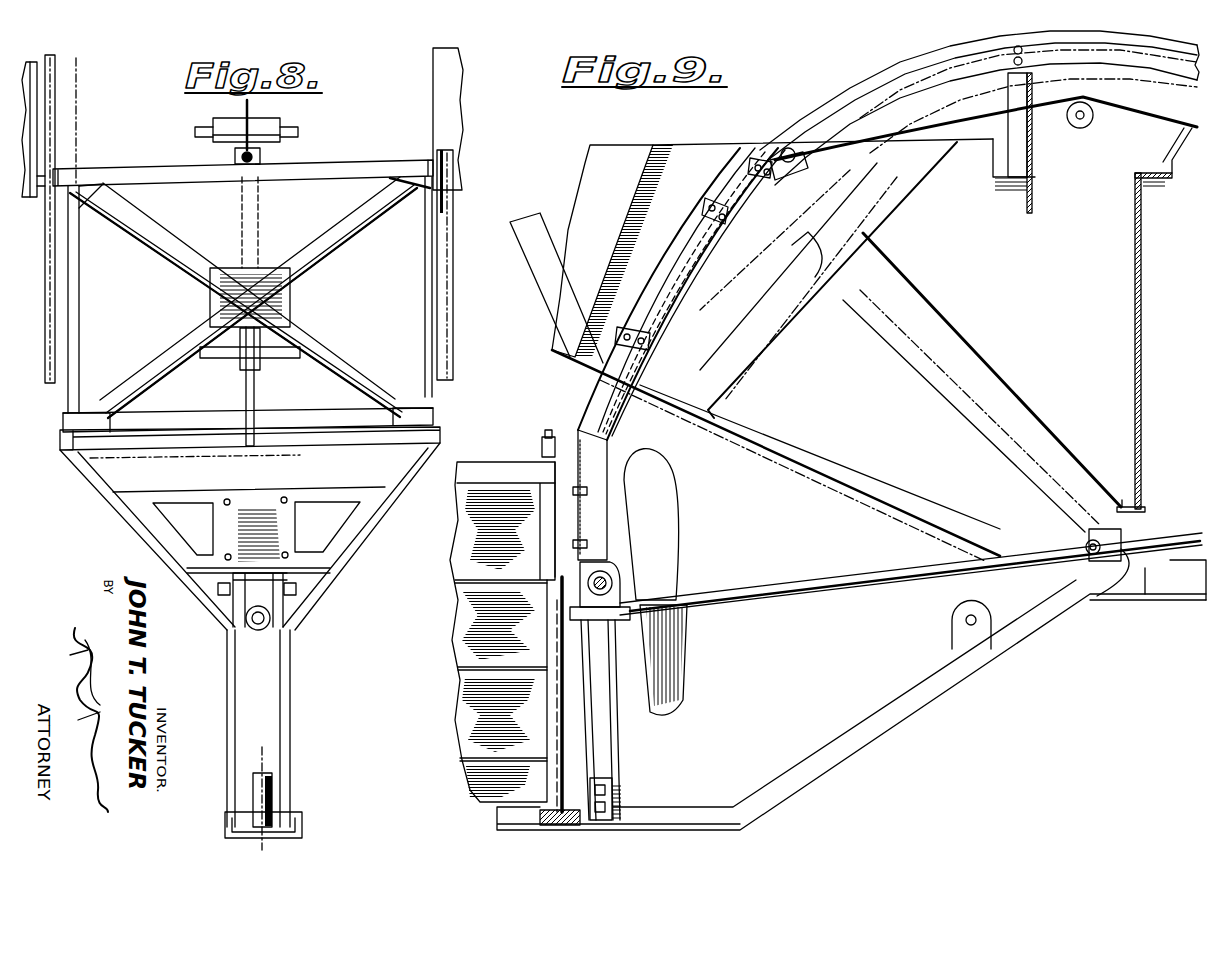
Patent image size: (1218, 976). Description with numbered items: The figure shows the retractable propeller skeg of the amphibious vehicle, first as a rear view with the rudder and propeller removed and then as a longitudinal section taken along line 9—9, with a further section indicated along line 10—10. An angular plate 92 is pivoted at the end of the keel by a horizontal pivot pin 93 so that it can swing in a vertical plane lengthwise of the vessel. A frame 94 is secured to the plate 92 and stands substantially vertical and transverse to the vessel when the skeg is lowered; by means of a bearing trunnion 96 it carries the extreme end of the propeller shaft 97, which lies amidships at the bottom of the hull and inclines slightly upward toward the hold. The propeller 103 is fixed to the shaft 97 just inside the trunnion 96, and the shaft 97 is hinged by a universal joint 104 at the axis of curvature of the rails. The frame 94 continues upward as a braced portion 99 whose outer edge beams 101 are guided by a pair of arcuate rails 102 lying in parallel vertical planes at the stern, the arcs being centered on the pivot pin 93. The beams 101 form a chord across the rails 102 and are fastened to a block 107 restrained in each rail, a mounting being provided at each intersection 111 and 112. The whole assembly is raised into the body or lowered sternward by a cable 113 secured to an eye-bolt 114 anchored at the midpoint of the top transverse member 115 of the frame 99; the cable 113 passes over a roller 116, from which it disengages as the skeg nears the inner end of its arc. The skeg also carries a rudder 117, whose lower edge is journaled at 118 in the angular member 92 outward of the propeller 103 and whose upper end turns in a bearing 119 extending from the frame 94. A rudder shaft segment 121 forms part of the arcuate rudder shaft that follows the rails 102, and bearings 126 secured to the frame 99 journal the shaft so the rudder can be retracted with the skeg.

In FIG. 8, the section line 9— 9 is at (83, 74).
In FIG. 9, the section line 10— 10 is at (683, 163).
In FIG. 9, the angular plate 92 is at (795, 765).
In FIG. 9, the horizontal pivot pin 93 is at (1095, 530).
In FIG. 8, the frame 94 is at (340, 580).
In FIG. 9, the frame 94 is at (608, 682).
In FIG. 8, the bearing trunnion 96 is at (270, 615).
In FIG. 9, the bearing trunnion 96 is at (585, 602).
In FIG. 8, the propeller shaft 97 is at (283, 627).
In FIG. 9, the propeller shaft 97 is at (868, 568).
In FIG. 8, the braced portion 99 is at (332, 340).
In FIG. 9, the braced portion 99 is at (585, 420).
In FIG. 8, the outer edge beams 101 is at (64, 404).
In FIG. 9, the outer edge beams 101 is at (690, 285).
In FIG. 8, the arcuate rails 102 is at (55, 335).
In FIG. 9, the arcuate rails 102 is at (848, 100).
In FIG. 9, the propeller 103 is at (683, 655).
In FIG. 9, the universal joint 104 is at (1125, 540).
In FIG. 9, the block 107 is at (795, 145).
In FIG. 9, the intersection 111 is at (712, 202).
In FIG. 9, the intersection 112 is at (620, 347).
In FIG. 8, the cable 113 is at (247, 118).
In FIG. 9, the cable 113 is at (985, 112).
In FIG. 8, the eye-bolt 114 is at (262, 160).
In FIG. 9, the eye-bolt 114 is at (790, 150).
In FIG. 8, the top transverse member 115 is at (322, 160).
In FIG. 9, the top transverse member 115 is at (780, 148).
In FIG. 8, the roller 116 is at (205, 138).
In FIG. 9, the roller 116 is at (1072, 125).
In FIG. 9, the rudder 117 is at (458, 695).
In FIG. 8, the rudder journal 118 is at (273, 828).
In FIG. 9, the rudder journal 118 is at (567, 808).
In FIG. 9, the bearing 119 is at (578, 480).
In FIG. 8, the rudder shaft segment 121 is at (258, 400).
In FIG. 8, the bearings 126 is at (238, 352).